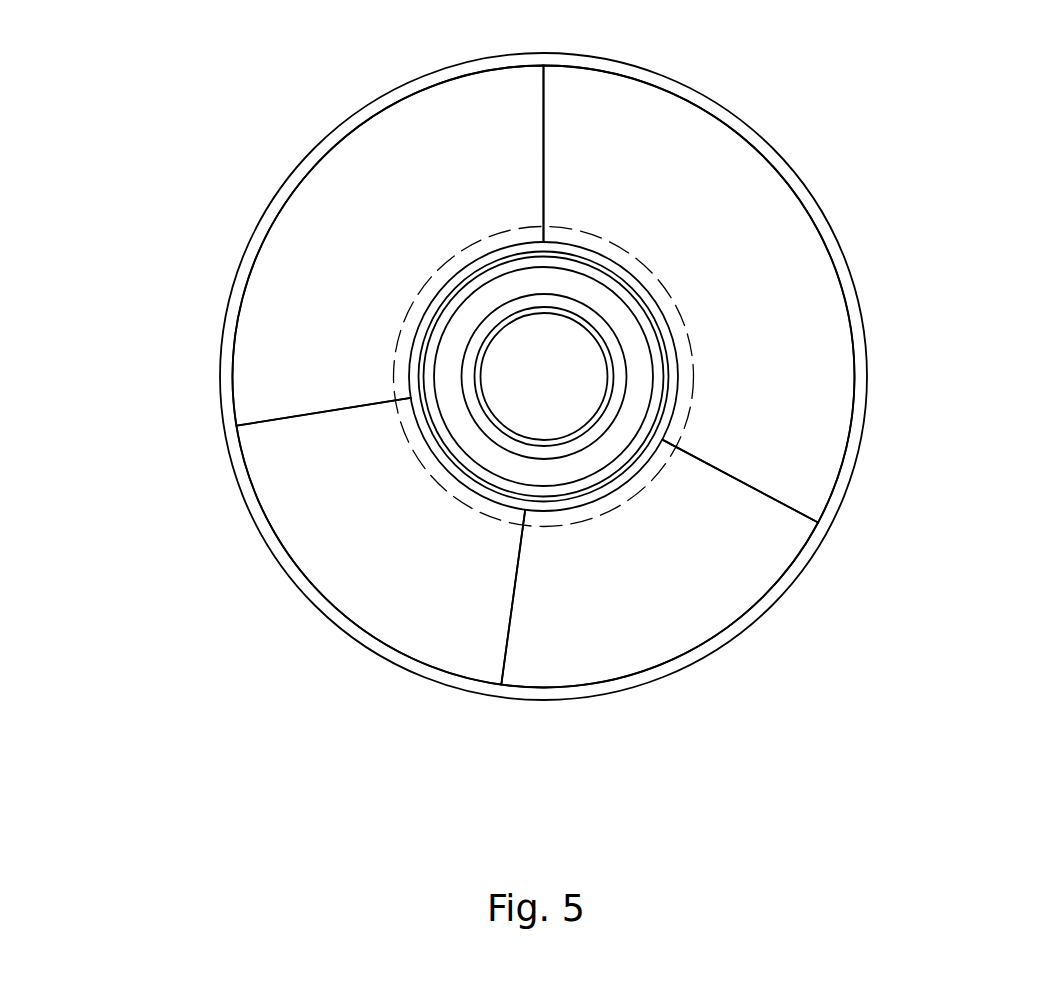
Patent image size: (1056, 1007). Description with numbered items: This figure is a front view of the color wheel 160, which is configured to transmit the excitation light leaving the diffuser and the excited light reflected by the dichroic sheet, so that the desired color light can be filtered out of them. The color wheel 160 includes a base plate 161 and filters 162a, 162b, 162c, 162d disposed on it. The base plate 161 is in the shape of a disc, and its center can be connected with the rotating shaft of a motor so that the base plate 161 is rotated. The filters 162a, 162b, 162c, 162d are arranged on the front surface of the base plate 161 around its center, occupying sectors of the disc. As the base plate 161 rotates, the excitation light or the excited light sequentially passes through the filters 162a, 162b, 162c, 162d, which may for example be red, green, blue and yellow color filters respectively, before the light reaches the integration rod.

The color wheel 160 is at (90, 70).
The base plate 161 is at (772, 158).
The filter 162a is at (357, 158).
The filter 162b is at (317, 548).
The filter 162c is at (627, 650).
The filter 162d is at (818, 283).